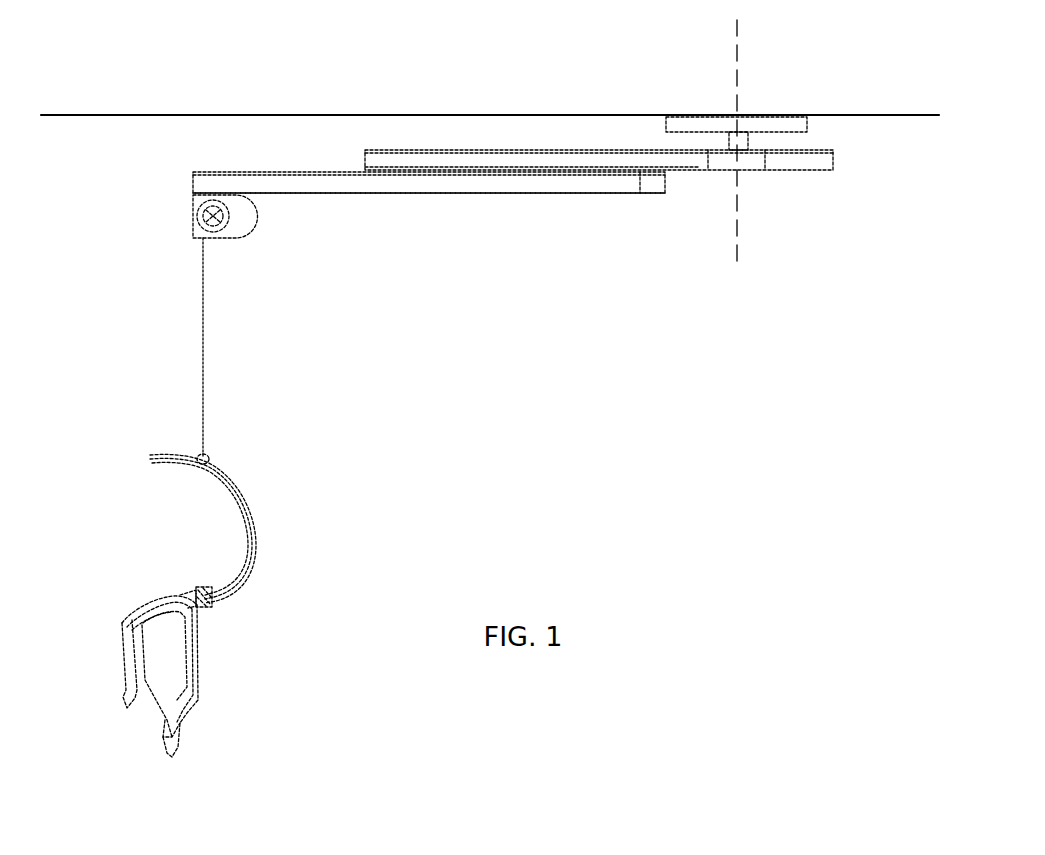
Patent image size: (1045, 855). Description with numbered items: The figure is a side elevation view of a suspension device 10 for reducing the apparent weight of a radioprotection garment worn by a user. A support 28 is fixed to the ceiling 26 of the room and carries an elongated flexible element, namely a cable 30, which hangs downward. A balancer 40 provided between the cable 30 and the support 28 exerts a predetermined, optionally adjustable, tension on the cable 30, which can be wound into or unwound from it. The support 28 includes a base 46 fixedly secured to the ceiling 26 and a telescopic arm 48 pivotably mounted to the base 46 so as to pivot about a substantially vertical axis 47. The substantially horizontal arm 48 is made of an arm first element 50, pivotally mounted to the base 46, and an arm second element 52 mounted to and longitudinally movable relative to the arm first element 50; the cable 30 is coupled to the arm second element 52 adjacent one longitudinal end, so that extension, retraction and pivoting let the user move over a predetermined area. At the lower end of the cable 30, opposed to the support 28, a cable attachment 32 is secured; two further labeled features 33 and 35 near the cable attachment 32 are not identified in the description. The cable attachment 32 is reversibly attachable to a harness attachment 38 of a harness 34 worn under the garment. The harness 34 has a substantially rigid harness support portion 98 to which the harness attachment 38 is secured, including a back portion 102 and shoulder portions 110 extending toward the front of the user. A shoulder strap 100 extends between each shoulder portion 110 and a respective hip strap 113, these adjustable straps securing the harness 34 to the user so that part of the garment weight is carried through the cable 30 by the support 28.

The suspension device 10 is at (487, 419).
The ceiling 26 is at (312, 113).
The support 28 is at (513, 181).
The cable 30 is at (203, 358).
The cable attachment 32 is at (262, 506).
The cord attachment loop 33 is at (200, 458).
The harness 34 is at (236, 654).
The hook 35 is at (250, 523).
The harness attachment 38 is at (212, 601).
The balancer 40 is at (238, 221).
The base 46 is at (783, 123).
The vertical axis 47 is at (737, 265).
The telescopic arm 48 is at (523, 196).
The arm first element 50 is at (540, 158).
The arm second element 52 is at (335, 180).
The harness support portion 98 is at (180, 597).
The shoulder strap 100 is at (128, 663).
The back portion 102 is at (195, 615).
The shoulder portions 110 is at (152, 600).
The hip straps 113 is at (178, 752).